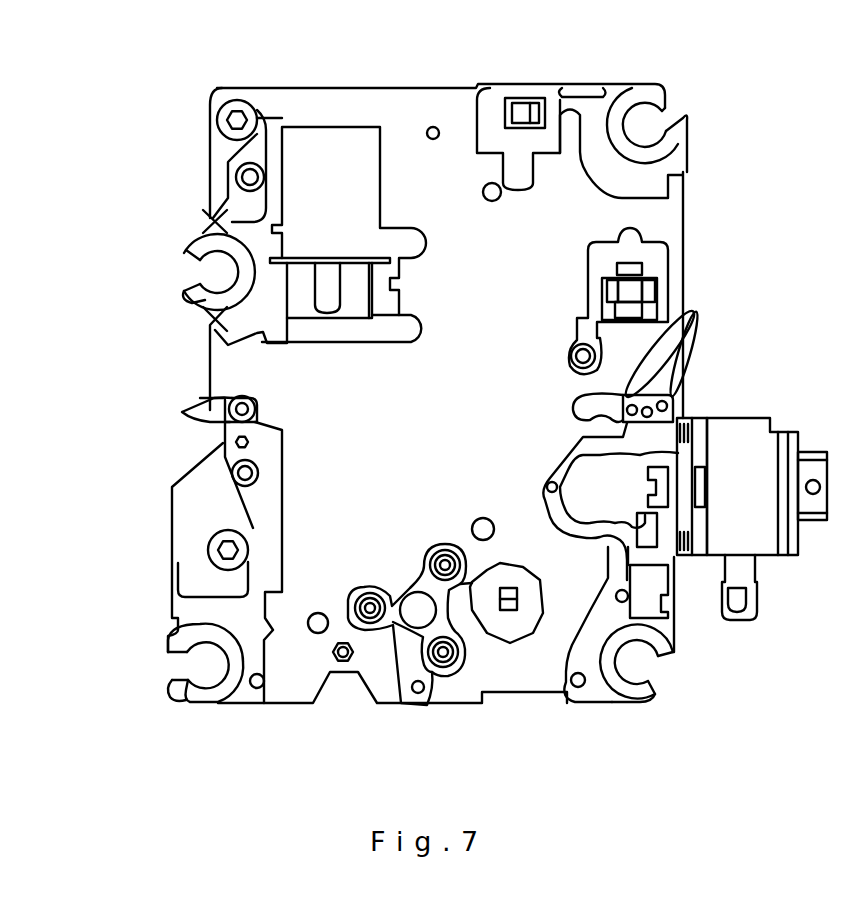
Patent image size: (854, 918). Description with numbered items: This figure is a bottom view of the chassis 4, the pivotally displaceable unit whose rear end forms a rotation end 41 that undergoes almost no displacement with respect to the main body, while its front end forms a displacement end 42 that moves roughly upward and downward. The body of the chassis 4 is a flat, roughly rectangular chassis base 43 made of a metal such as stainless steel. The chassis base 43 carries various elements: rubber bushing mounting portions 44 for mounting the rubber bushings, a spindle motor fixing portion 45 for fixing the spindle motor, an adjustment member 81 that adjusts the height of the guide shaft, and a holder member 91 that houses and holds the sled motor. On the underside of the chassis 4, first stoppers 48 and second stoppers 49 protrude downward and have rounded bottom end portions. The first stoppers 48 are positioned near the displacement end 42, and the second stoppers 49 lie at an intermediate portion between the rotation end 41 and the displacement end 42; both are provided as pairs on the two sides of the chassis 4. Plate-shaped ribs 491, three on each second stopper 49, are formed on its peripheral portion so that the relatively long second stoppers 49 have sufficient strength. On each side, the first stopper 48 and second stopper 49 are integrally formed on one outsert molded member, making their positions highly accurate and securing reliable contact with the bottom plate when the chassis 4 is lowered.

The chassis 4 is at (478, 84).
The rotation end 41 is at (345, 86).
The displacement end 42 is at (280, 705).
The chassis base 43 is at (320, 390).
The rubber bushing mounting portions 44 is at (192, 254).
The spindle motor fixing portion 45 is at (437, 668).
The first stoppers 48 is at (250, 690).
The second stoppers 49 is at (668, 405).
The ribs 491 is at (692, 313).
The adjustment member 81 is at (211, 117).
The holder member 91 is at (737, 450).